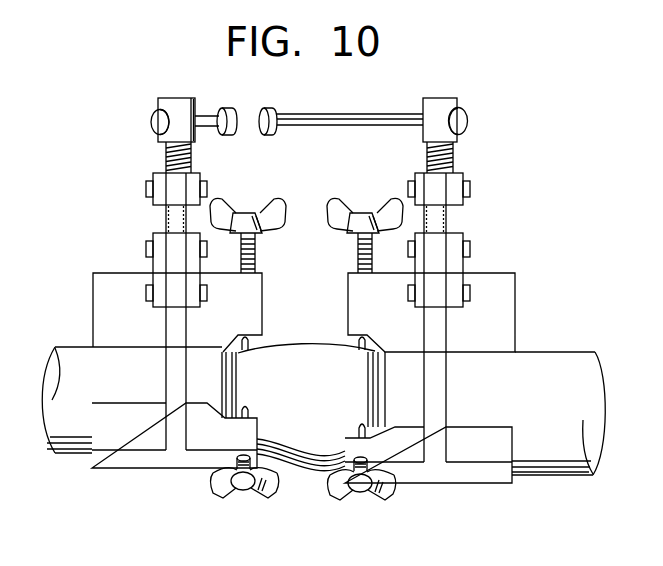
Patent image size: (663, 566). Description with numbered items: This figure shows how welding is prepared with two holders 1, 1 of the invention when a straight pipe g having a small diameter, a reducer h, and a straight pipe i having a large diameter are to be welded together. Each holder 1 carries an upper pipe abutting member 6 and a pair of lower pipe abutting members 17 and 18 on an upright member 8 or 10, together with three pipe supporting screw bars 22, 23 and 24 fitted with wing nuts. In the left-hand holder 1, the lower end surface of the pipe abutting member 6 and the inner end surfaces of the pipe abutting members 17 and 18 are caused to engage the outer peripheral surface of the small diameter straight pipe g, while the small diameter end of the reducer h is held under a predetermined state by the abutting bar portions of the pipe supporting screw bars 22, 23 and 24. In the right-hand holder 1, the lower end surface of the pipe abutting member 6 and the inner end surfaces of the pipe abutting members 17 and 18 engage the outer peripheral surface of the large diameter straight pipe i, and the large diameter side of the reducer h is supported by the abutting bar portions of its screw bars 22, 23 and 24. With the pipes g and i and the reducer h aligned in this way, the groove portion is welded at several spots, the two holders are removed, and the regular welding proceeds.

The holder 1 is at (148, 107).
The pipe abutting member 6 is at (108, 282).
The left support post 8 is at (175, 220).
The right support post 10 is at (437, 220).
The pipe abutting member 17 is at (97, 433).
The pipe abutting member 18 is at (492, 480).
The pipe supporting screw bar 22 is at (255, 257).
The pipe supporting screw bar 23 is at (232, 461).
The pipe supporting screw bar 24 is at (392, 503).
The small diameter straight pipe g is at (72, 345).
The large diameter straight pipe i is at (550, 351).
The reducer h is at (308, 468).